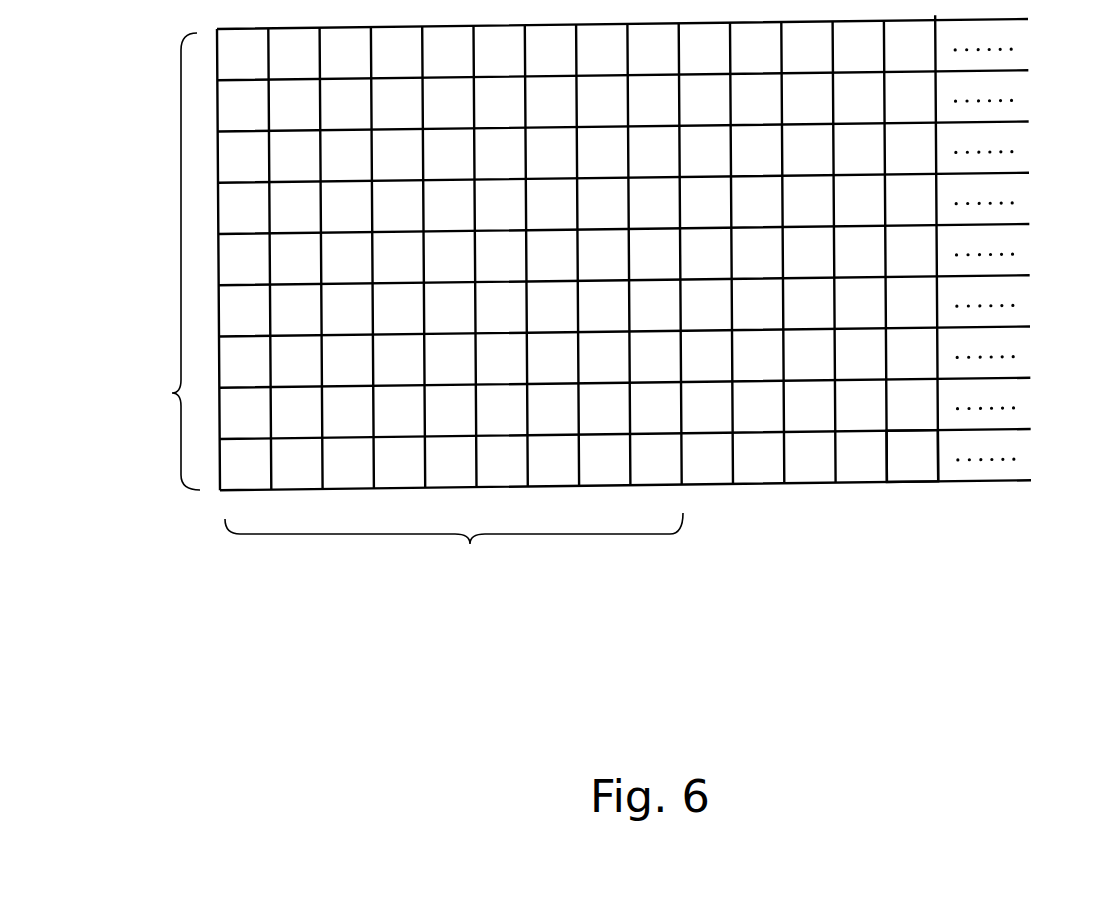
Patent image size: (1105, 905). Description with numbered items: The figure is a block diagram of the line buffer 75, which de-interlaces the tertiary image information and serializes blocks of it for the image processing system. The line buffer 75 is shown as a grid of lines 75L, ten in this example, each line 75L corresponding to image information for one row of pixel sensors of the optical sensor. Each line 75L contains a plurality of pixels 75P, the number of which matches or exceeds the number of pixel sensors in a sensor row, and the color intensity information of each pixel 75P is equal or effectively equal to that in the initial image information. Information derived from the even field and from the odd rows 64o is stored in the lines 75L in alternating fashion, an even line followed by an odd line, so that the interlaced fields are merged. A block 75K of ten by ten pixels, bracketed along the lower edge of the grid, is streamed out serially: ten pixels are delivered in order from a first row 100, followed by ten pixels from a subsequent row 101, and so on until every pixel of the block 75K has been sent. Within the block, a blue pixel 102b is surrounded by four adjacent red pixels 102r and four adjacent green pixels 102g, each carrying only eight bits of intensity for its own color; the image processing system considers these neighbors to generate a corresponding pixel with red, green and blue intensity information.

The first row 100 is at (535, 252).
The subsequent row 101 is at (622, 49).
The blue pixel 102b is at (383, 120).
The red pixel 102r is at (327, 165).
The green pixel 102g is at (394, 177).
The odd rows 64o is at (155, 261).
The line buffer 75 is at (454, 627).
The block of pixels 75K is at (291, 562).
The pixel 75P is at (913, 469).
The line 75L is at (1039, 453).